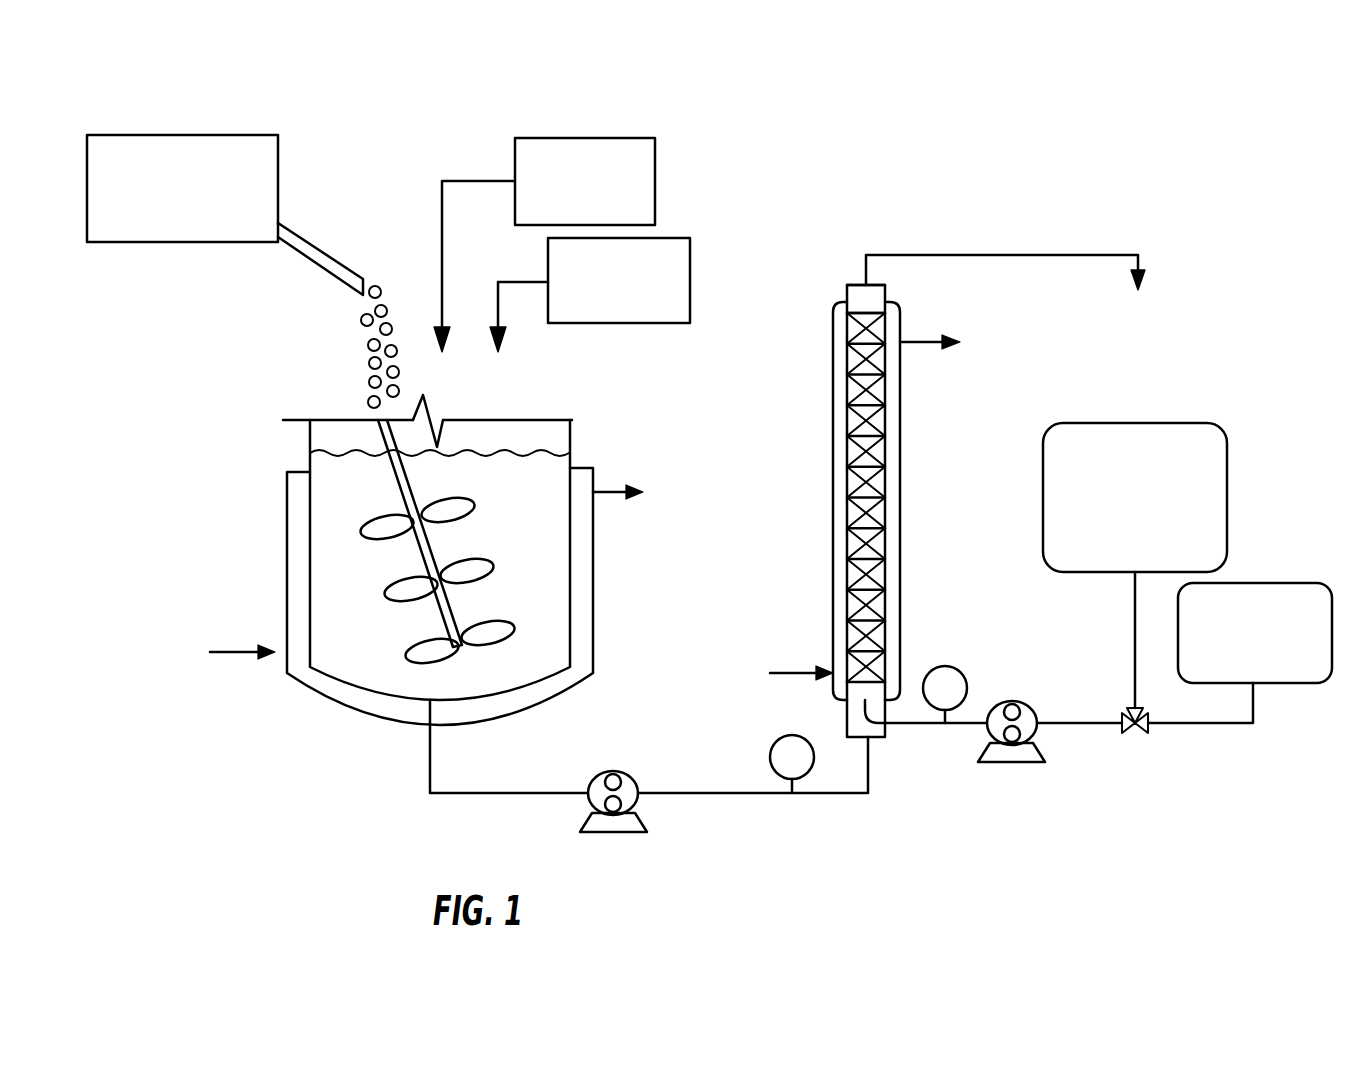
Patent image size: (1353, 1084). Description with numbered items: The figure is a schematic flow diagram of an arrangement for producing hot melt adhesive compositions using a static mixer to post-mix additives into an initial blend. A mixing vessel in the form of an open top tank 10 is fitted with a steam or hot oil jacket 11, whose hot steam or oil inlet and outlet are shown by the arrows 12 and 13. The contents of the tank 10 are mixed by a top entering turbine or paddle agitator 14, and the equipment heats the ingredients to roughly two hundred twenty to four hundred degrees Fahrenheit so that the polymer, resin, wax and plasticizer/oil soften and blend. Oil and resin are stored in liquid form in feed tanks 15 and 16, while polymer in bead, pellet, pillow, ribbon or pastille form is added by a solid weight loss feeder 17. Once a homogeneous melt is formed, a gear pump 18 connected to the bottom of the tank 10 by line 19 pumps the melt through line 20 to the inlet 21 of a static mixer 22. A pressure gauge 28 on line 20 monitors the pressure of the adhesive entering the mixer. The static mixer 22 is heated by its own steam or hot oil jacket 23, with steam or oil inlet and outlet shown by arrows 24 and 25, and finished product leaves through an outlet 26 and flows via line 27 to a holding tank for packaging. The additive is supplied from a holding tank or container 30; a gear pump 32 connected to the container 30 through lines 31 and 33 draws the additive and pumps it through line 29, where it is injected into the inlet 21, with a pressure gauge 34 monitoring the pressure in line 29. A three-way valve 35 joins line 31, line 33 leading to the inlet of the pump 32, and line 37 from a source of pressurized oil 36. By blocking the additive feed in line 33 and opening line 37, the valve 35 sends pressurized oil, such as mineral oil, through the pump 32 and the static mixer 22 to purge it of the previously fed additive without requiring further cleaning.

The open top tank 10 is at (310, 436).
The hot oil jacket 11 is at (287, 524).
The inlet arrow 12 is at (220, 660).
The outlet arrow 13 is at (607, 483).
The paddle agitator 14 is at (393, 600).
The oil feed tank 15 is at (555, 138).
The resin feed tank 16 is at (690, 268).
The solid weight loss feeder 17 is at (168, 135).
The gear pump 18 is at (620, 833).
The line 19 is at (480, 797).
The line 20 is at (817, 795).
The inlet 21 is at (887, 740).
The static mixer 22 is at (847, 508).
The hot oil jacket 23 is at (833, 567).
The inlet arrow 24 is at (785, 668).
The outlet arrow 25 is at (918, 350).
The outlet 26 is at (840, 296).
The line 27 is at (998, 255).
The pressure gauge 28 is at (768, 750).
The line 29 is at (930, 727).
The container 30 is at (1278, 583).
The line 31 is at (1225, 728).
The gear pump 32 is at (1012, 765).
The line 33 is at (1077, 728).
The pressure gauge 34 is at (952, 668).
The three-way valve 35 is at (1133, 735).
The source of pressurized oil 36 is at (1043, 500).
The line 37 is at (1133, 630).